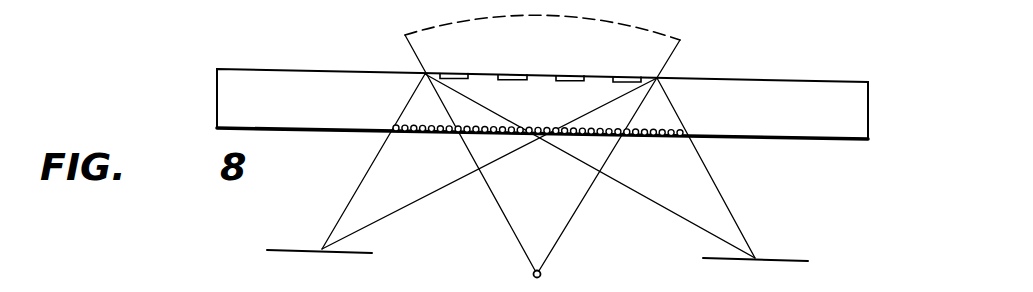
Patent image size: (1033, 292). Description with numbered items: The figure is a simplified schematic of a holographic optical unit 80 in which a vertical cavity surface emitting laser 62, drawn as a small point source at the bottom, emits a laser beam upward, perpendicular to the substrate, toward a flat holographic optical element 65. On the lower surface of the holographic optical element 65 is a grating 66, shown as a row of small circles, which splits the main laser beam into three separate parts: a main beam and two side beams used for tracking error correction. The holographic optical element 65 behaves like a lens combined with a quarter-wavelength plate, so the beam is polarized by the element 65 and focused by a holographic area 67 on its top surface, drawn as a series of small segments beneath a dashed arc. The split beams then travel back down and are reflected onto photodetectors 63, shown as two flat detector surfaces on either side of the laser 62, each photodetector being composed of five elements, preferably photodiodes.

The detection system 80 is at (143, 226).
The holographic optical element 65 is at (772, 80).
The holographic area 67 is at (507, 80).
The grating 66 is at (549, 126).
The photodetectors 63 is at (287, 248).
The vertical cavity surface emitting laser 62 is at (532, 274).